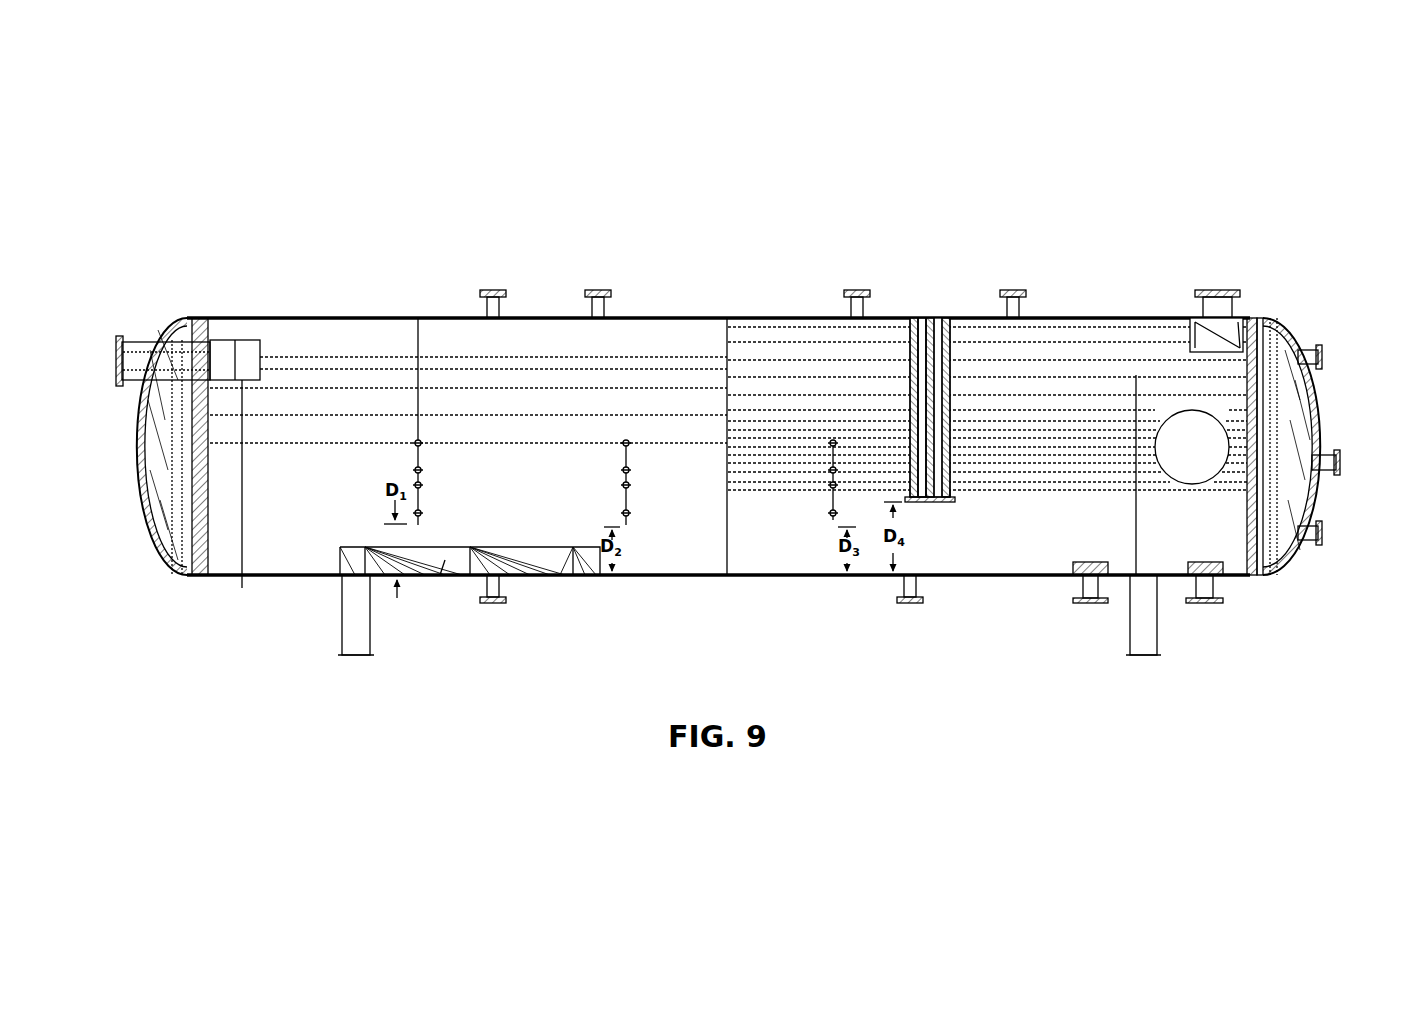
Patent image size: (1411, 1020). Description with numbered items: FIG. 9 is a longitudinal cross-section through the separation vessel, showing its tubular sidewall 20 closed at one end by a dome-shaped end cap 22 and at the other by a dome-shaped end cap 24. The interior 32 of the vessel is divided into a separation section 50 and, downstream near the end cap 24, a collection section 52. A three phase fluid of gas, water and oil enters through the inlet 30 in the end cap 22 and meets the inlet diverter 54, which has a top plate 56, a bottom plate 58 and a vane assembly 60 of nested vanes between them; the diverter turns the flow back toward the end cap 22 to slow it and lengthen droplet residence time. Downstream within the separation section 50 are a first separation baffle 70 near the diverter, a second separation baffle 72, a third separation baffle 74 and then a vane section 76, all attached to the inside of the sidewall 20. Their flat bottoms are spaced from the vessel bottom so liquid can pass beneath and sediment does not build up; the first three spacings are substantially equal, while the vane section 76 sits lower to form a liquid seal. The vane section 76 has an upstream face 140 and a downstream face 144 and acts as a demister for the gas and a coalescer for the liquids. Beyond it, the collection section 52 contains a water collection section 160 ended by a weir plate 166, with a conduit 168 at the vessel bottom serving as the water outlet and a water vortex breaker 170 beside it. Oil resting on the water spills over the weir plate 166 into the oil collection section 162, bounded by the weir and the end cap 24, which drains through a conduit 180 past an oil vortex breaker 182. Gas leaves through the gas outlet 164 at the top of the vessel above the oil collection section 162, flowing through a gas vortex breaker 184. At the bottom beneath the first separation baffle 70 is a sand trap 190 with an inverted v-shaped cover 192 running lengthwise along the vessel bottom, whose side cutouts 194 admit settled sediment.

The sidewall 20 is at (960, 318).
The end cap 22 is at (172, 330).
The end cap 24 is at (1283, 330).
The inlet 30 is at (118, 340).
The interior 32 is at (338, 506).
The separation section 50 is at (695, 325).
The collection section 52 is at (1230, 537).
The inlet diverter 54 is at (222, 333).
The top plate 56 is at (247, 345).
The bottom plate 58 is at (242, 588).
The vane assembly 60 is at (250, 355).
The first separation baffle 70 is at (420, 373).
The second separation baffle 72 is at (630, 505).
The third separation baffle 74 is at (829, 512).
The vane section 76 is at (951, 500).
The upstream face 140 is at (906, 343).
The downstream face 144 is at (955, 348).
The water collection section 160 is at (1120, 555).
The oil collection section 162 is at (1170, 548).
The gas outlet 164 is at (1238, 290).
The weir plate 166 is at (1136, 375).
The conduit 168 is at (1080, 592).
The water vortex breaker 170 is at (1085, 573).
The conduit 180 is at (1222, 580).
The oil vortex breaker 182 is at (1218, 573).
The gas vortex breaker 184 is at (1240, 338).
The trap 190 is at (548, 568).
The cover 192 is at (428, 576).
The cutouts 194 is at (440, 572).